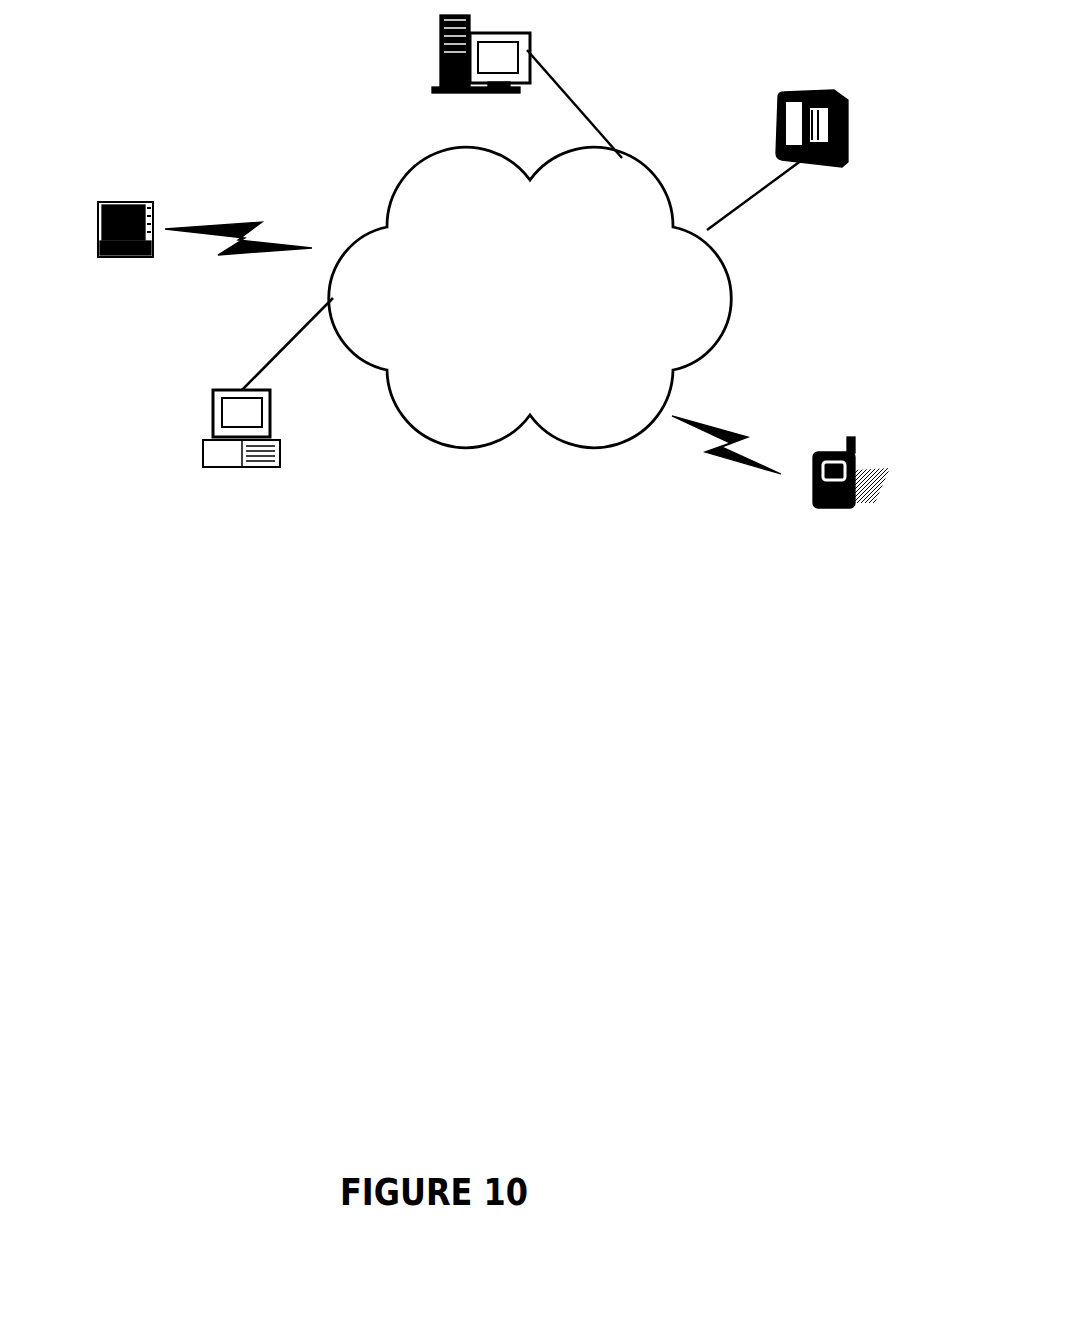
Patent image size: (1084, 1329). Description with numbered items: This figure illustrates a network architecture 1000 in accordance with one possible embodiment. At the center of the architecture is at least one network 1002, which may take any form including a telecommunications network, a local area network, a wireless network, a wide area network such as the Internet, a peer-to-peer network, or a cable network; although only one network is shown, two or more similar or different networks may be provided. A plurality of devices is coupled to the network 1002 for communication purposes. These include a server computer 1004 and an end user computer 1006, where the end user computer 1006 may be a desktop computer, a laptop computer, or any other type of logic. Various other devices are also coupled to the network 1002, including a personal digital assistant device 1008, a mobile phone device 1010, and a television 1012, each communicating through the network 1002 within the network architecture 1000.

The network architecture 1000 is at (440, 729).
The network 1002 is at (590, 447).
The server computer 1004 is at (440, 50).
The end user computer 1006 is at (203, 447).
The personal digital assistant (PDA) device 1008 is at (127, 202).
The mobile phone device 1010 is at (813, 455).
The television 1012 is at (790, 88).